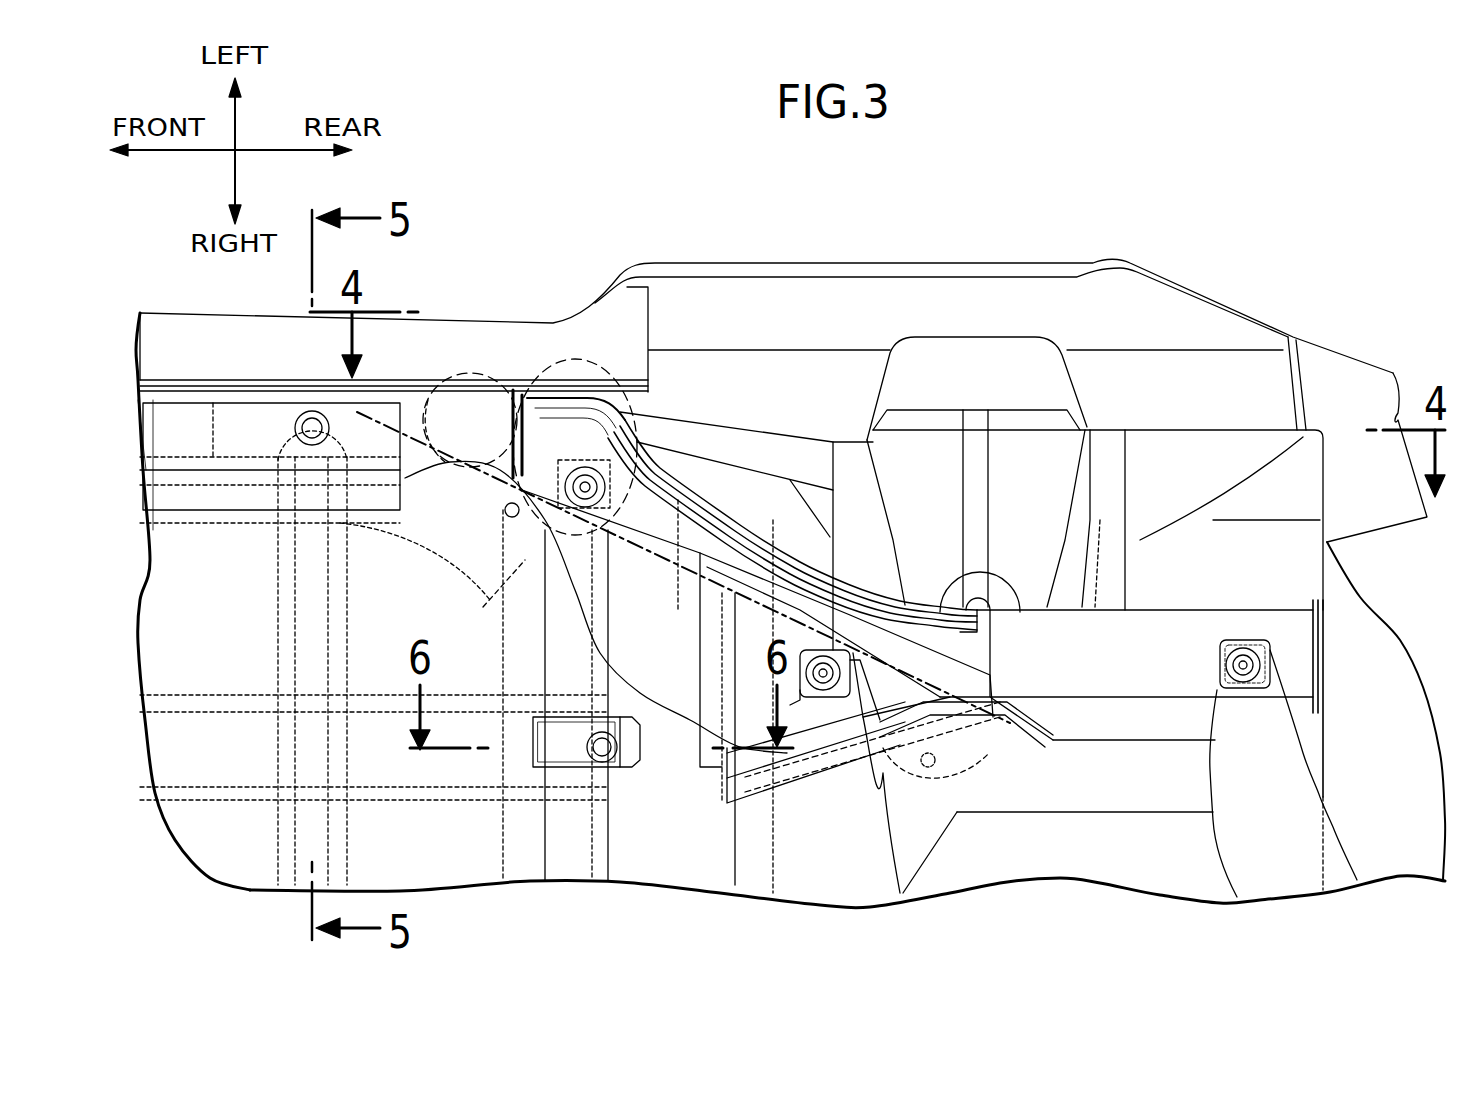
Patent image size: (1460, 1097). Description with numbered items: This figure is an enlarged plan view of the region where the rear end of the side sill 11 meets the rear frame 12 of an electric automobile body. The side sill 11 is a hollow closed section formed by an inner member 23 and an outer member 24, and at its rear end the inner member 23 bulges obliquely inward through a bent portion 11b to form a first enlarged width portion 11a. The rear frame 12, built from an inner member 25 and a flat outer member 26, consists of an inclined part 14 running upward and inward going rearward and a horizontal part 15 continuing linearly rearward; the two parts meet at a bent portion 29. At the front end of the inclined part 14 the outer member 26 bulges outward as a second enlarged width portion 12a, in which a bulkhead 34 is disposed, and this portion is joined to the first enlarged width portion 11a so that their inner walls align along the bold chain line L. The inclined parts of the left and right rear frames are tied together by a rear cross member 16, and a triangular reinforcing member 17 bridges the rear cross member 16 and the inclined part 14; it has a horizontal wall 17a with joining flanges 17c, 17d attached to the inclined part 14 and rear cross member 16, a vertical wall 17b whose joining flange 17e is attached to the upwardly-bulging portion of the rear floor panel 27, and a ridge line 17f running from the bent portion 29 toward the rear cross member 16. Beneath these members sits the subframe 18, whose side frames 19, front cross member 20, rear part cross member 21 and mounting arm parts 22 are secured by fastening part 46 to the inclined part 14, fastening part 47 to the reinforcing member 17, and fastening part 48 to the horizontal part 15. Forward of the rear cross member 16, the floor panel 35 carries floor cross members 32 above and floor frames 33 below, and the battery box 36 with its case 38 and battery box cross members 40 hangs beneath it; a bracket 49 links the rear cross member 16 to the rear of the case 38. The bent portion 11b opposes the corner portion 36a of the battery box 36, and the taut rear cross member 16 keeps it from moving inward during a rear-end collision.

The side sill 11 is at (505, 322).
The first enlarged width portion 11a is at (440, 470).
The bent portion 11b is at (452, 418).
The rear frame 12 is at (880, 572).
The second enlarged width portion 12a is at (486, 600).
The inclined part 14 is at (722, 508).
The horizontal part 15 is at (1160, 600).
The rear cross member 16 is at (672, 860).
The reinforcing member 17 is at (758, 790).
The horizontal wall 17a is at (883, 695).
The vertical wall 17b is at (852, 738).
The joining flange 17c is at (757, 598).
The joining flange 17d is at (700, 673).
The joining flange 17e is at (920, 780).
The ridge line 17f is at (805, 762).
The subframe 18 is at (1086, 815).
The side frame 19 is at (1115, 740).
The front cross member 20 is at (770, 862).
The rear part cross member 21 is at (1237, 873).
The mounting arm part 22 is at (680, 720).
The inner member 23 is at (178, 400).
The outer member 24 is at (210, 333).
The inner member 25 is at (687, 563).
The outer member 26 is at (683, 490).
The rear floor panel 27 is at (985, 860).
The bent portion 29 is at (975, 597).
The floor cross member 32 is at (278, 633).
The floor frame 33 is at (390, 725).
The bulkhead 34 is at (555, 395).
The floor panel 35 is at (400, 860).
The battery box 36 is at (548, 840).
The corner portion 36a is at (510, 508).
The case 38 is at (165, 560).
The battery box cross member 40 is at (295, 735).
The fastening part 46 is at (583, 470).
The fastening part 47 is at (838, 650).
The fastening part 48 is at (1242, 648).
The bracket 49 is at (530, 758).
The bold chain line L is at (667, 562).